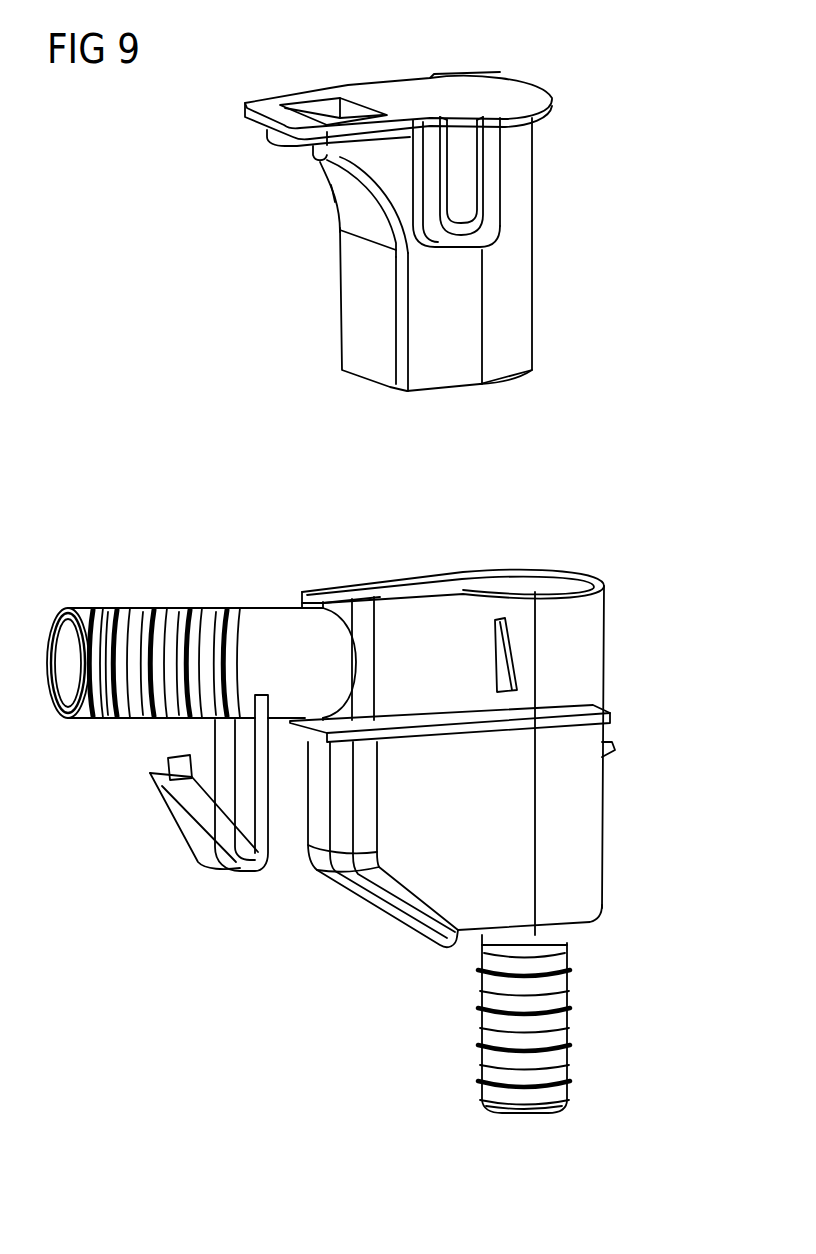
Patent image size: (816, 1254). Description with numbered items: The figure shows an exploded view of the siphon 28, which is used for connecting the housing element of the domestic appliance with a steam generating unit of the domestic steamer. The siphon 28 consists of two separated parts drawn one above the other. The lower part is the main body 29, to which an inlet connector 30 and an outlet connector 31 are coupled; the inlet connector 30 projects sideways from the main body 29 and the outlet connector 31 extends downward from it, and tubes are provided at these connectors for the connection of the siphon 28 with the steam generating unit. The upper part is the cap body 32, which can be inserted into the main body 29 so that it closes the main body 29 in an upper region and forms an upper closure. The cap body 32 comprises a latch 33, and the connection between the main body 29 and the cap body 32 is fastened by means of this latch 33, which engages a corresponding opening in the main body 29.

The siphon 28 is at (686, 74).
The main body 29 is at (433, 873).
The inlet connector 30 is at (137, 627).
The outlet connector 31 is at (553, 1019).
The cap body 32 is at (462, 97).
The latch 33 is at (490, 187).